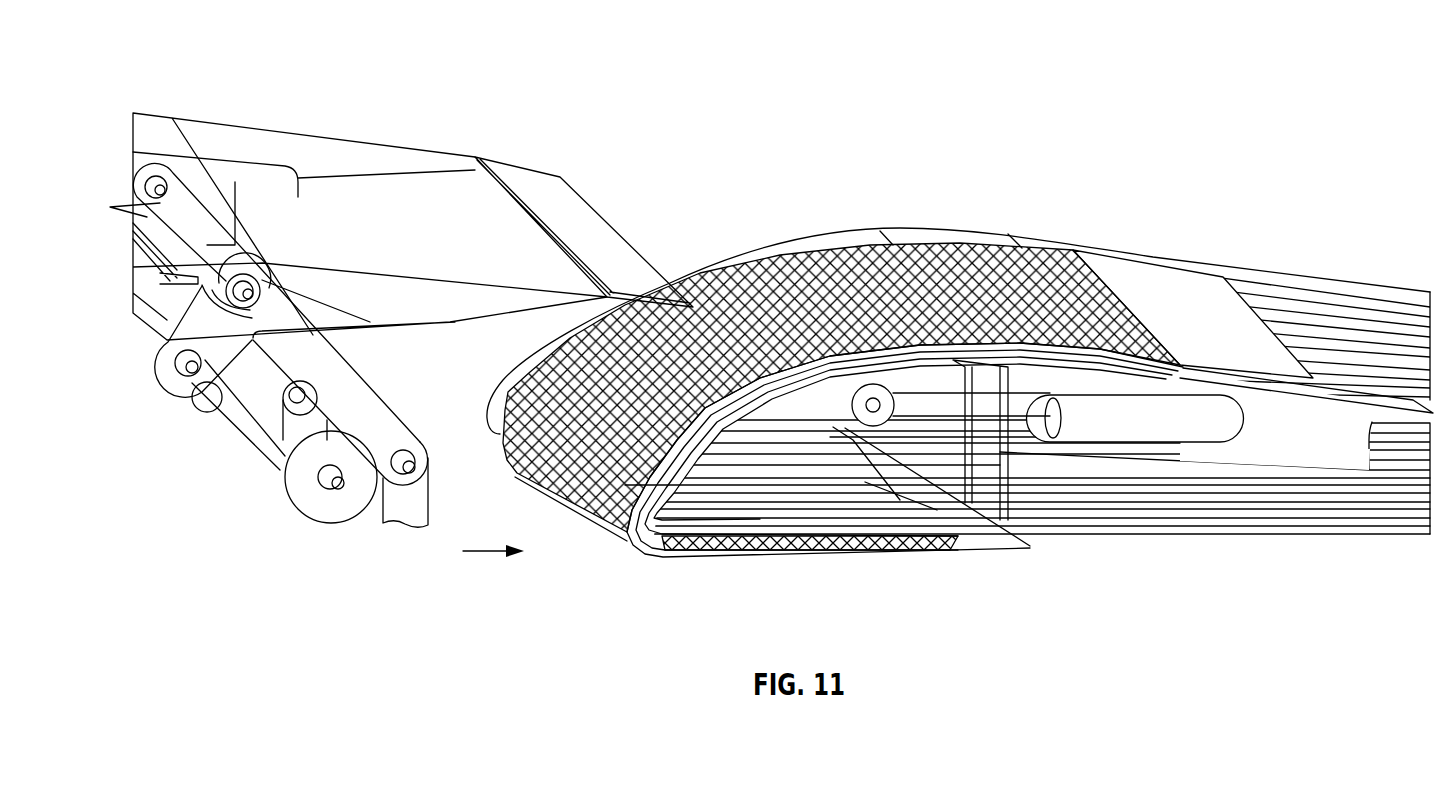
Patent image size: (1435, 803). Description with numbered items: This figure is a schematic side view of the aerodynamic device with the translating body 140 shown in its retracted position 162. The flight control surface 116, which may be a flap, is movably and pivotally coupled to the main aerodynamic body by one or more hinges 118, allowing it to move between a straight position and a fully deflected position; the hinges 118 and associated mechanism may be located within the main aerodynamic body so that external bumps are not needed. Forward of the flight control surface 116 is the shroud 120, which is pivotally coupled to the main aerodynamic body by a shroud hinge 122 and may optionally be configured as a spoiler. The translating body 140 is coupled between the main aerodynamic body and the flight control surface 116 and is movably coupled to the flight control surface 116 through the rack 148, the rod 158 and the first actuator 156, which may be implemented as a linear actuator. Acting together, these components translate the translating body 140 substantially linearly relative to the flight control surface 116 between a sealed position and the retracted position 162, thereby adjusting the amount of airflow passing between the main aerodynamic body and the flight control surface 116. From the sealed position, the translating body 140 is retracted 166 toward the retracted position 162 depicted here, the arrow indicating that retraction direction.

The flight control surface 116 is at (1255, 258).
The hinge 118 is at (338, 490).
The shroud 120 is at (420, 187).
The shroud hinge 122 is at (162, 348).
The translating body 140 is at (790, 297).
The retracted position 162 is at (841, 387).
The rack 148 is at (828, 407).
The first actuator 156 is at (1137, 430).
The rod 158 is at (932, 455).
The retracted (direction of retraction) 166 is at (490, 553).